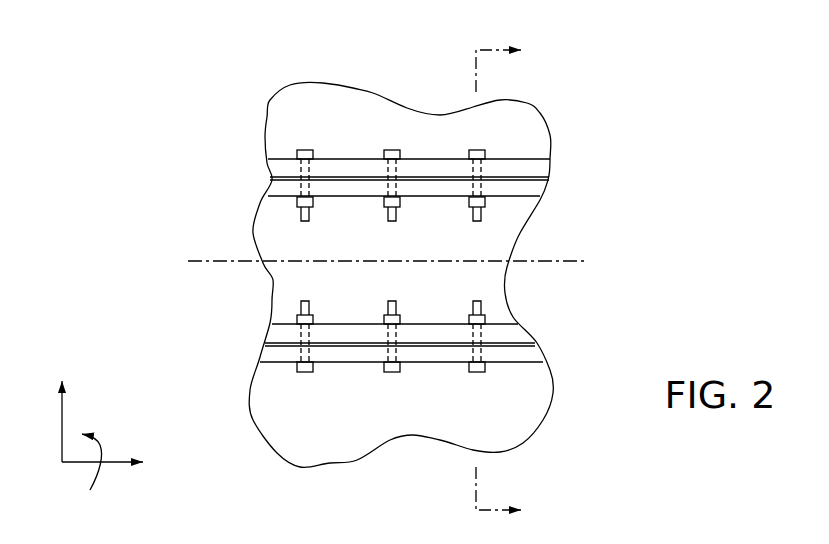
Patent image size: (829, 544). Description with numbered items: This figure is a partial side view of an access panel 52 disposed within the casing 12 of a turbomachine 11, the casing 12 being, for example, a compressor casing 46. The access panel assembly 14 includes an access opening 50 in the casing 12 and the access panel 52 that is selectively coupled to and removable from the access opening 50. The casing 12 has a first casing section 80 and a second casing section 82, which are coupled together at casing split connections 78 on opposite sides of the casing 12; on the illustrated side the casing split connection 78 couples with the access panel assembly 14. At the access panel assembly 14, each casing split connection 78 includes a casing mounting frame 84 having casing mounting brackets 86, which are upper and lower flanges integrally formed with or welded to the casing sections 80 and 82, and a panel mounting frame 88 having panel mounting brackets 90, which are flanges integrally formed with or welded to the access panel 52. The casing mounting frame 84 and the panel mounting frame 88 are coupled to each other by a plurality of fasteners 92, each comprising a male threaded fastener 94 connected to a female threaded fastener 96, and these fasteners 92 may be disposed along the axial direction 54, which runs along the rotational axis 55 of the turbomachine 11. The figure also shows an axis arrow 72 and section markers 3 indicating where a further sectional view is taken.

The section line 3- 3 is at (510, 282).
The turbomachine 11 is at (606, 46).
The casing 12 is at (374, 89).
The access panel assembly 14 is at (603, 232).
The compressor casing 46 is at (412, 110).
The access opening 50 is at (544, 340).
The access panel 52 is at (296, 275).
The axial direction 54 is at (78, 464).
The rotational axis 55 is at (574, 262).
The rotational direction 72 is at (92, 437).
The casing split connection 78 is at (219, 177).
The first casing section 80 is at (538, 113).
The second casing section 82 is at (537, 433).
The casing mounting frame 84 is at (256, 169).
The casing mounting bracket 86 is at (540, 170).
The panel mounting frame 88 is at (257, 188).
The panel mounting bracket 90 is at (537, 187).
The fastener 92 is at (391, 266).
The male threaded fastener 94 is at (396, 168).
The female threaded fastener 96 is at (399, 205).